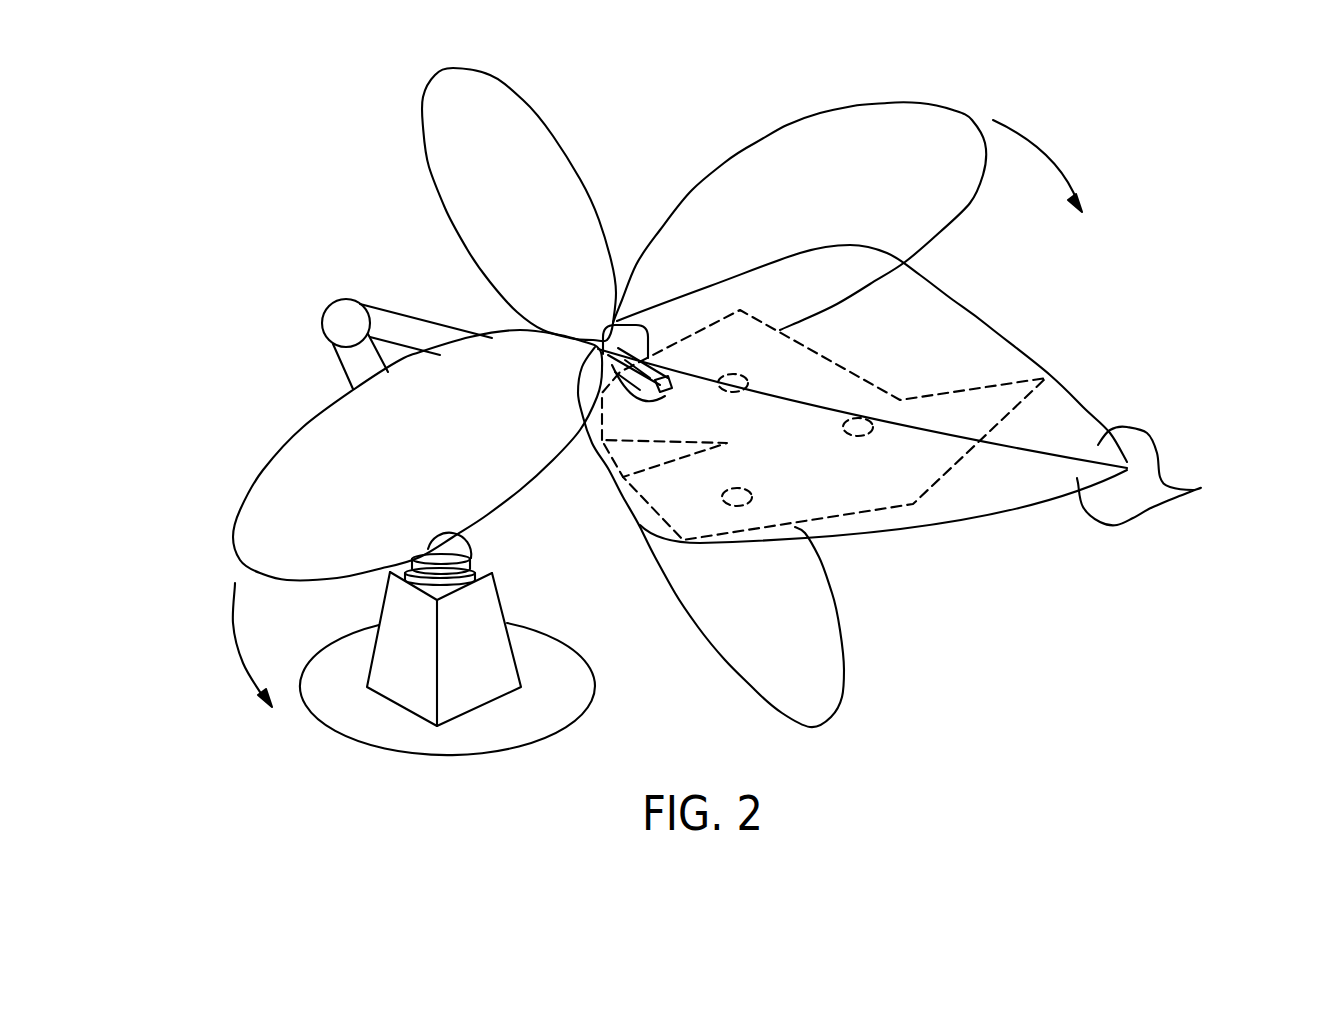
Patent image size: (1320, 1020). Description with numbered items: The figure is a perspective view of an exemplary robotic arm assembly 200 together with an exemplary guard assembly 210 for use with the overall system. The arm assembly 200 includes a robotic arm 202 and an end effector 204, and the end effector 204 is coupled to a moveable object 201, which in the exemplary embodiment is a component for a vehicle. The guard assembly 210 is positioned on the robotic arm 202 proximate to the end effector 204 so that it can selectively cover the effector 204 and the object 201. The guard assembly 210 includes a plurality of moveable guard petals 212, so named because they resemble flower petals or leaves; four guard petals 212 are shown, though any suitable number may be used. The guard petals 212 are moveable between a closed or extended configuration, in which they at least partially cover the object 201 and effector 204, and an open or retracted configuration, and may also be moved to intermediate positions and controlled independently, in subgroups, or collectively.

The robotic arm assembly 200 is at (265, 242).
The moveable object 201 is at (890, 480).
The robotic arm 202 is at (329, 340).
The end effector 204 is at (632, 348).
The guard assembly 210 is at (1035, 302).
The guard petals 212 is at (1165, 476).